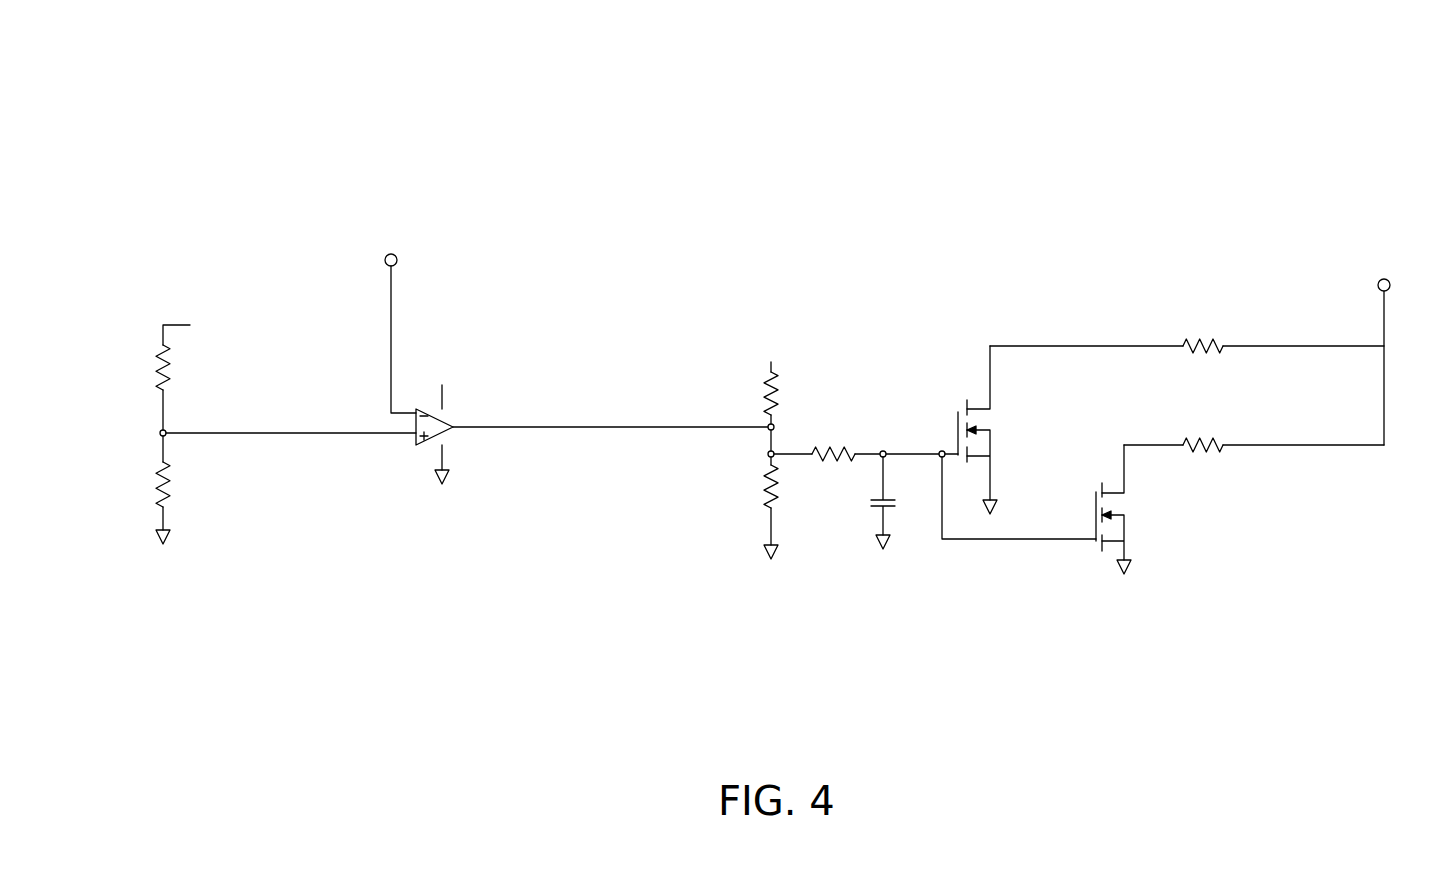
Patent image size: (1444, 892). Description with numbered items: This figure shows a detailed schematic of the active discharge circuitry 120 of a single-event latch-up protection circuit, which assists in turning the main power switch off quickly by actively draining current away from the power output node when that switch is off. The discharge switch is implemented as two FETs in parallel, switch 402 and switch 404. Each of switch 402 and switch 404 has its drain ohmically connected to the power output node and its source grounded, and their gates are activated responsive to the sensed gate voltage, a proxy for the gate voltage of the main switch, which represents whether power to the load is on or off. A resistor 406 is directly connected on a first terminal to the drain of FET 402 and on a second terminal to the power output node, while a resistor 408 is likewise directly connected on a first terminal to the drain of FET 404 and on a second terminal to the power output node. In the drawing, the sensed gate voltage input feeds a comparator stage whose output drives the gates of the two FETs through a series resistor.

The active discharge circuitry 120 is at (238, 141).
The switch 402 is at (958, 412).
The switch 404 is at (1096, 543).
The resistor 406 is at (1223, 346).
The resistor 408 is at (1222, 447).